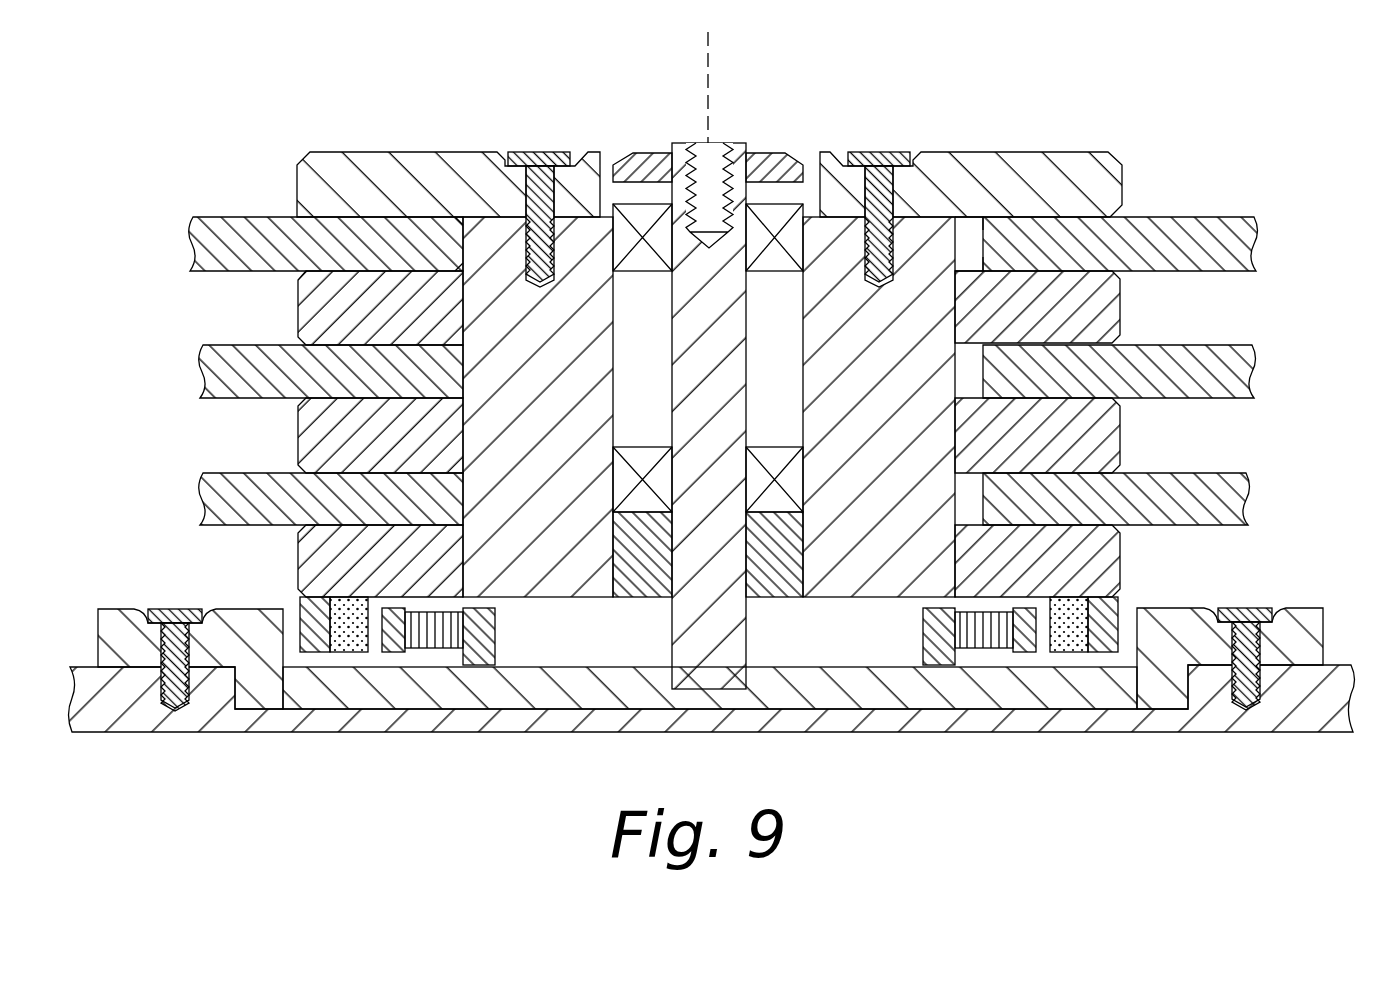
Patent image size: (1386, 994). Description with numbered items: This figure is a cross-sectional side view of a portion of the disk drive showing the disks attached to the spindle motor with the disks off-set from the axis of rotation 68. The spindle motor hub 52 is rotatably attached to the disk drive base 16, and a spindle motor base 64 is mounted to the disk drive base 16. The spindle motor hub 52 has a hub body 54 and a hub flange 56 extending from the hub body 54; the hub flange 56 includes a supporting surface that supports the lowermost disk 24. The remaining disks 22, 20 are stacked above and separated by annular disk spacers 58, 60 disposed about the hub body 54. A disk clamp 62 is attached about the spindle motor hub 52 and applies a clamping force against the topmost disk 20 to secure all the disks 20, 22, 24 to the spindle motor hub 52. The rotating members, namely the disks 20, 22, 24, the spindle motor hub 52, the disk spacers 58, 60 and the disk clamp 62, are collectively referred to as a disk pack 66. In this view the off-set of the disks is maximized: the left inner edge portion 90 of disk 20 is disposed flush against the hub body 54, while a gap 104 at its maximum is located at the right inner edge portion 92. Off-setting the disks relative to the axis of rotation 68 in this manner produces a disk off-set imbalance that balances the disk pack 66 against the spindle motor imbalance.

The disk drive base 16 is at (583, 734).
The disk 20 is at (258, 217).
The disk 22 is at (256, 345).
The disk 24 is at (256, 473).
The spindle motor hub 52 is at (613, 312).
The hub body 54 is at (613, 396).
The hub flange 56 is at (298, 563).
The disk spacer 58 is at (298, 306).
The disk spacer 60 is at (298, 435).
The disk clamp 62 is at (416, 157).
The spindle motor base 64 is at (98, 635).
The disk pack 66 is at (1270, 148).
The axis of rotation 68 is at (711, 70).
The inner edge portion 90 is at (459, 248).
The inner edge portion 92 is at (988, 243).
The gap 104 is at (968, 219).